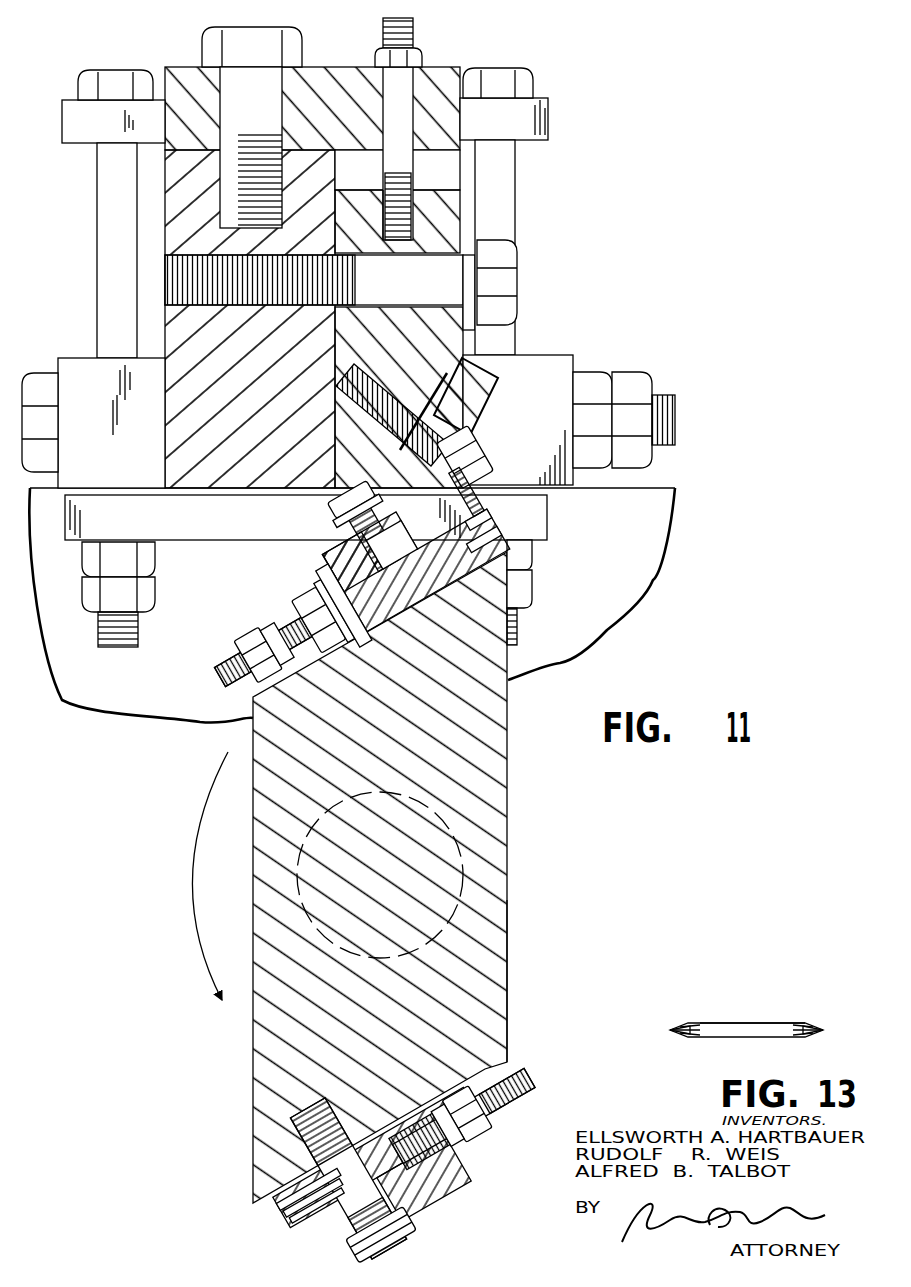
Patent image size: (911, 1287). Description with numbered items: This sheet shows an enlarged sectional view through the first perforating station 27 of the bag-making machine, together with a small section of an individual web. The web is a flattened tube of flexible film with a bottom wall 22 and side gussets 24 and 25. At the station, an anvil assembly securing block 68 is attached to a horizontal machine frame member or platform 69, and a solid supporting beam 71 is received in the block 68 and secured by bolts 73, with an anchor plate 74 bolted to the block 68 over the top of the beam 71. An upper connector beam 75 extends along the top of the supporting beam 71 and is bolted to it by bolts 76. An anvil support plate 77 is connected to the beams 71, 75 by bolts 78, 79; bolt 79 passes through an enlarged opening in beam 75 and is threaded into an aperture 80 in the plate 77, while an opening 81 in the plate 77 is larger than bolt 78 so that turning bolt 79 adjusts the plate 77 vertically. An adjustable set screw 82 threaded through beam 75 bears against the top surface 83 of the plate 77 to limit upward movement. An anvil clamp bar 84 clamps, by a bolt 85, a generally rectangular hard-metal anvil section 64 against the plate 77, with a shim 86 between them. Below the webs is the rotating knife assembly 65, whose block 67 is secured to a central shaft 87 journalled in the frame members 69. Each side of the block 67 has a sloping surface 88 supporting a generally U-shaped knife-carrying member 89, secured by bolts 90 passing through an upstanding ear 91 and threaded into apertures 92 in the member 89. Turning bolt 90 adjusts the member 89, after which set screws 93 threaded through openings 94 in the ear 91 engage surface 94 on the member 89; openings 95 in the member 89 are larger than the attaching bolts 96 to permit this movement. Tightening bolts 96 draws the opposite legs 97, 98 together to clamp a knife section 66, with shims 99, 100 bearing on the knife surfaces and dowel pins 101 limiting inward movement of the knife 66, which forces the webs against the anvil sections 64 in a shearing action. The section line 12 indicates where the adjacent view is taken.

In FIG. 11, the section line / direction arrow 12 is at (490, 503).
In FIG. 13, the bottom wall 22 is at (742, 1029).
In FIG. 13, the side gusset 24 is at (819, 1032).
In FIG. 13, the side gusset 25 is at (673, 1031).
In FIG. 11, the first perforating station 27 is at (365, 252).
In FIG. 11, the anvil section 64 is at (351, 499).
In FIG. 11, the knife assembly 65 is at (512, 788).
In FIG. 11, the perforating knife 66 is at (498, 498).
In FIG. 11, the rotating block 67 is at (495, 993).
In FIG. 11, the anvil assembly securing block 68 is at (86, 366).
In FIG. 11, the machine frame member or platform 69 is at (632, 578).
In FIG. 11, the supporting beam 71 is at (195, 358).
In FIG. 11, the bolt 73 is at (46, 387).
In FIG. 11, the anchor plate 74 is at (76, 119).
In FIG. 11, the upper connector beam 75 is at (318, 82).
In FIG. 11, the bolt 76 is at (215, 46).
In FIG. 11, the anvil support plate 77 is at (362, 207).
In FIG. 11, the bolt 78 is at (403, 296).
In FIG. 11, the bolt 79 is at (417, 58).
In FIG. 11, the aperture 80 is at (412, 208).
In FIG. 11, the opening 81 is at (463, 312).
In FIG. 11, the adjustable set screw 82 is at (384, 30).
In FIG. 11, the top surface 83 is at (406, 200).
In FIG. 11, the anvil clamp bar 84 is at (492, 384).
In FIG. 11, the bolt 85 is at (461, 460).
In FIG. 11, the shim 86 is at (468, 470).
In FIG. 11, the central shaft 87 is at (463, 869).
In FIG. 11, the sloping surface 88 is at (415, 552).
In FIG. 11, the knife-carrying member 89 is at (352, 562).
In FIG. 11, the bolt 90 is at (288, 637).
In FIG. 11, the upstanding ear 91 is at (277, 644).
In FIG. 11, the aperture 92 is at (334, 611).
In FIG. 11, the set screw 93 is at (264, 651).
In FIG. 11, the threaded opening / surface 94 is at (344, 605).
In FIG. 11, the opening 95 is at (355, 1175).
In FIG. 11, the bolt 96 is at (358, 510).
In FIG. 11, the leg 97 is at (368, 529).
In FIG. 11, the leg 98 is at (483, 539).
In FIG. 11, the shim 99 is at (466, 491).
In FIG. 11, the shim 100 is at (478, 519).
In FIG. 11, the dowel pin 101 is at (391, 545).